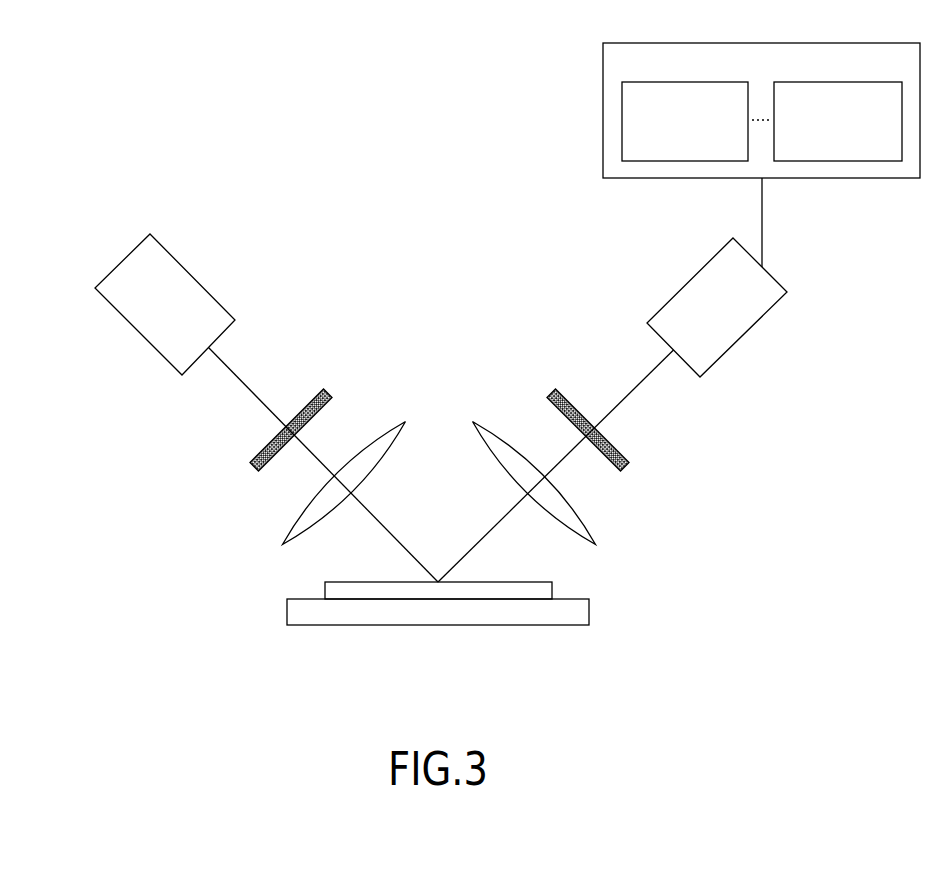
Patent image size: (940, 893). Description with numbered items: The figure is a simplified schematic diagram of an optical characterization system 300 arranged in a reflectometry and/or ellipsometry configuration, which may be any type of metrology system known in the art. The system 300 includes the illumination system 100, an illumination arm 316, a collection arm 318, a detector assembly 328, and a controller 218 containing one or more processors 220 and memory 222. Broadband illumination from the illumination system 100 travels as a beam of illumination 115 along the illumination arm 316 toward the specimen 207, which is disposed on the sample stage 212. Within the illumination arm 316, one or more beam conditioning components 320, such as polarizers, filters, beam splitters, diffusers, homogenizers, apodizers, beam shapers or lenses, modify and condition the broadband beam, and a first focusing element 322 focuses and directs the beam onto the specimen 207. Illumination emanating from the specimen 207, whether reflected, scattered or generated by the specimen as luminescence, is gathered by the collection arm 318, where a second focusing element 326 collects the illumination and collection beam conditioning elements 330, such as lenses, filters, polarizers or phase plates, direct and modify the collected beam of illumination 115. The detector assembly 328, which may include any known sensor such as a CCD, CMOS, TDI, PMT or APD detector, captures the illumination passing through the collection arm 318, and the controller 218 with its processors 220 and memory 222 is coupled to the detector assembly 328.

The optical characterization system 300 is at (118, 75).
The controller 218 is at (761, 155).
The processors 220 is at (685, 121).
The memory 222 is at (838, 121).
The illumination system 100 is at (165, 304).
The beam of illumination 115 is at (245, 385).
The beam conditioning components 320 is at (262, 450).
The first focusing element 322 is at (290, 522).
The second focusing element 326 is at (588, 522).
The collection beam conditioning elements 330 is at (615, 445).
The detector assembly 328 is at (717, 307).
The specimen 207 is at (552, 590).
The sample stage 212 is at (589, 610).
The illumination arm 316 is at (167, 423).
The collection arm 318 is at (713, 423).